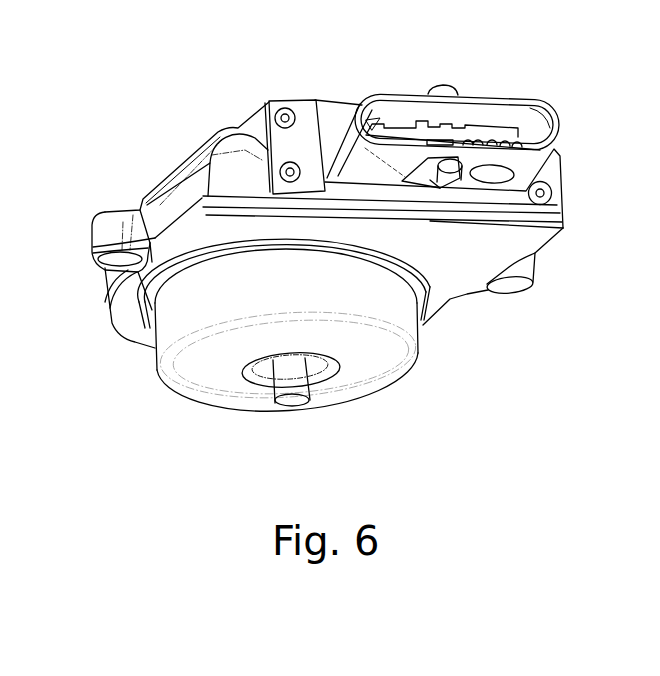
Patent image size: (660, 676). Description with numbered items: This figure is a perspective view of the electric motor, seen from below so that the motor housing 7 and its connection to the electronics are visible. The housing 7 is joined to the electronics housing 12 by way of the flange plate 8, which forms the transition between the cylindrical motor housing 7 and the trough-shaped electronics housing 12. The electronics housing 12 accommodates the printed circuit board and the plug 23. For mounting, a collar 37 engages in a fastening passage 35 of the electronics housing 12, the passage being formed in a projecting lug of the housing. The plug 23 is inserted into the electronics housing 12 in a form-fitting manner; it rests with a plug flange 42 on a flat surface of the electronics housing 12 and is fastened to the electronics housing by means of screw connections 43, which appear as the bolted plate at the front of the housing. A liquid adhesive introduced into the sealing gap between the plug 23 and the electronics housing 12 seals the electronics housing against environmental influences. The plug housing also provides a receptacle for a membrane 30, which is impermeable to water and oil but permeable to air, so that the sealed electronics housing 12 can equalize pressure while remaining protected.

The housing 7 is at (375, 373).
The flange plate 8 is at (443, 275).
The electronics housing 12 is at (107, 217).
The plug 23 is at (408, 113).
The membrane 30 is at (499, 173).
The fastening passage 35 is at (120, 235).
The collar 37 is at (97, 250).
The plug flange 42 is at (549, 201).
The screw connections 43 is at (281, 100).